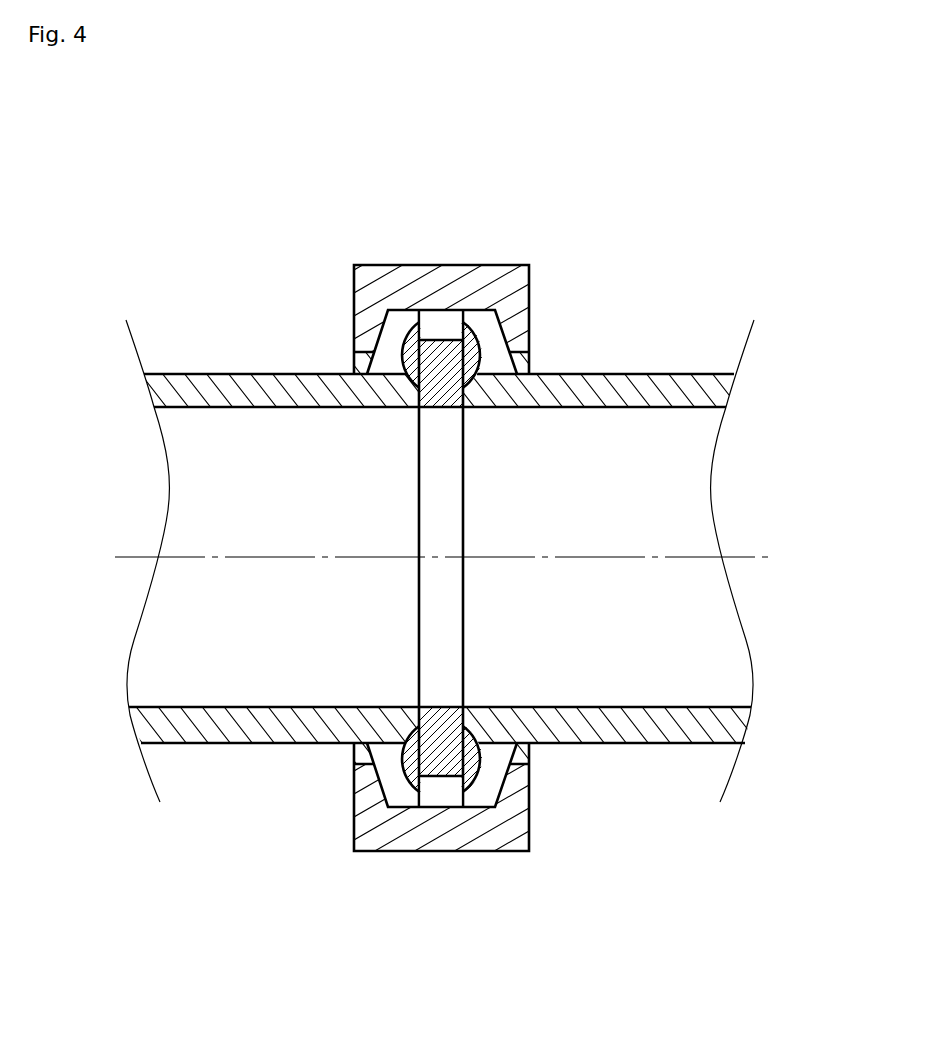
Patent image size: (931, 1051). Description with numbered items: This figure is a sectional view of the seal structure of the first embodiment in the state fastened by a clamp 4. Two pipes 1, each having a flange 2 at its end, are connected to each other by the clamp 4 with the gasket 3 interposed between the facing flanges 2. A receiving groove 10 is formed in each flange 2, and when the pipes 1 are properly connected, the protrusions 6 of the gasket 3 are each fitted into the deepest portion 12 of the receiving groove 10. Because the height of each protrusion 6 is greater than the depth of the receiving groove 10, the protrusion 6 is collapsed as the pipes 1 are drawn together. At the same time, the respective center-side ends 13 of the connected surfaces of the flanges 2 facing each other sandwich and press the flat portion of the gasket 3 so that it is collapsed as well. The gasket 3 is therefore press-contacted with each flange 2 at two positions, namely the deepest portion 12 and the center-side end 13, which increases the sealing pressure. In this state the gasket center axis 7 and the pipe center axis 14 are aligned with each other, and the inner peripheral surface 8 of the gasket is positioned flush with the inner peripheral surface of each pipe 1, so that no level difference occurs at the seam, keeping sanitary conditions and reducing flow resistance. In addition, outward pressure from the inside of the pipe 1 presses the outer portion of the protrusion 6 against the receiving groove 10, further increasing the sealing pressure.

The pipe 1 is at (233, 745).
The flange 2 is at (354, 310).
The gasket 3 is at (448, 777).
The clamp 4 is at (375, 852).
The protrusion 6 is at (410, 332).
The gasket center axis 7 is at (622, 557).
The inner peripheral surface of the gasket 8 is at (447, 412).
The receiving groove 10 is at (431, 338).
The deepest portion of the receiving groove 12 is at (357, 363).
The center-side end 13 is at (417, 406).
The pipe center axis 14 is at (442, 740).